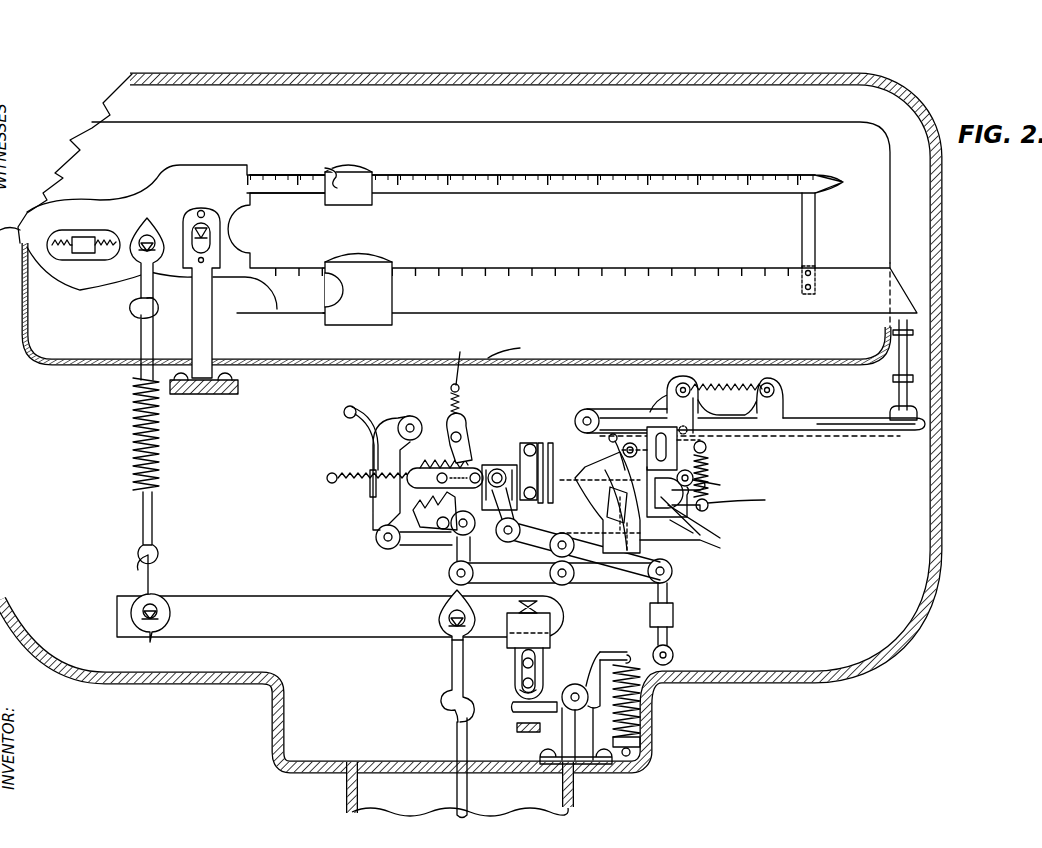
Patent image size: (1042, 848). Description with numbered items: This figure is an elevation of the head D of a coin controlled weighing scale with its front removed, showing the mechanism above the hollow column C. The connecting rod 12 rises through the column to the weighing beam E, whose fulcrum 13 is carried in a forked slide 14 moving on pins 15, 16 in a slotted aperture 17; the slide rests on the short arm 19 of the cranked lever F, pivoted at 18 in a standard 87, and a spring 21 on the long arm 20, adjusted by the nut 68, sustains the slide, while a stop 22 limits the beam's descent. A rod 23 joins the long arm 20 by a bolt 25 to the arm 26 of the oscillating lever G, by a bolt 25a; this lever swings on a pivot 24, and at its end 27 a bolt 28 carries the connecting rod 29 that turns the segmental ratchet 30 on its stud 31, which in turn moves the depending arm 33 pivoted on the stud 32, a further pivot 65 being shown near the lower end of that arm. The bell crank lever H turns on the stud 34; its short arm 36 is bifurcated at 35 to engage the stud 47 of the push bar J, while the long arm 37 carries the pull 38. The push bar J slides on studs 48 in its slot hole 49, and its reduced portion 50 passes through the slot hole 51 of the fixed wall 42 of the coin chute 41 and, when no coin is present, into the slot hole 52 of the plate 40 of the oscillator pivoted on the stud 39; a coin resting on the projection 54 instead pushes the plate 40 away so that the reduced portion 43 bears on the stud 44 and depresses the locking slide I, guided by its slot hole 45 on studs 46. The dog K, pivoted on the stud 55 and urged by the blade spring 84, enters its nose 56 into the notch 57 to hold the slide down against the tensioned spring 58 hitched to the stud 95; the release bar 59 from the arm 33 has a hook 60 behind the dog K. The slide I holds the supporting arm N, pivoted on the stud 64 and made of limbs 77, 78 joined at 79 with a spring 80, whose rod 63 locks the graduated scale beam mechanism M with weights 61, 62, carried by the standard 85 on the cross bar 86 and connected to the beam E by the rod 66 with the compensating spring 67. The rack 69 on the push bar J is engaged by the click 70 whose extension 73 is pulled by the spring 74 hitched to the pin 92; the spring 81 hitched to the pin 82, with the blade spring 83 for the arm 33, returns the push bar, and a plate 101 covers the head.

The connecting rod 12 is at (447, 750).
The fulcrum 13 is at (509, 607).
The forked slide 14 is at (510, 636).
The pin 15 is at (522, 663).
The pin 16 is at (520, 692).
The slotted aperture 17 is at (522, 680).
The pivot 18 is at (576, 678).
The short arm 19 is at (512, 715).
The long arm 20 is at (640, 650).
The spring 21 is at (641, 683).
The stop 22 is at (526, 740).
The rod 23 is at (680, 635).
The pivot 24 is at (572, 578).
The bolt 25 is at (673, 655).
The bolt 25a is at (673, 576).
The arm 26 is at (622, 586).
The end 27 is at (560, 573).
The bolt 28 is at (449, 577).
The connecting rod 29 is at (453, 557).
The segmental ratchet 30 is at (440, 540).
The stud 31 is at (438, 513).
The stud 32 is at (405, 416).
The depending ratchet-engaging arm 33 is at (383, 503).
The stud 34 is at (517, 536).
The bifurcated end 35 is at (498, 468).
The short arm 36 is at (492, 505).
The long arm 37 is at (578, 510).
The pull 38 is at (667, 512).
The stud 39 is at (584, 550).
The plate 40 is at (552, 440).
The coin chute 41 is at (544, 433).
The fixed wall 42 is at (518, 468).
The reduced portion 43 is at (695, 474).
The stud 44 is at (700, 486).
The slot hole 45 is at (708, 505).
The studs 46 is at (748, 499).
The stud 47 is at (485, 462).
The studs 48 is at (432, 468).
The slot hole 49 is at (456, 483).
The reduced portion 50 is at (528, 446).
The slot hole 51 is at (524, 495).
The slot hole 52 is at (540, 448).
The projection 54 is at (605, 505).
The stud 55 is at (630, 442).
The nose 56 is at (684, 520).
The notch 57 is at (705, 525).
The tensioned spring 58 is at (718, 477).
The release bar 59 is at (486, 538).
The hook 60 is at (640, 536).
The weight 61 is at (400, 260).
The weight 62 is at (363, 172).
The rod 63 is at (916, 352).
The stud 64 is at (590, 410).
The pivot 65 is at (375, 522).
The rod 66 is at (166, 515).
The compensating coil spring 67 is at (124, 436).
The adjusting nut 68 is at (640, 752).
The rack 69 is at (448, 418).
The click 70 is at (445, 460).
The extension 73 is at (468, 417).
The tensioned spring 74 is at (447, 393).
The limb 77 is at (627, 421).
The limb 78 is at (762, 425).
The pivot 79 is at (688, 430).
The spring 80 is at (710, 382).
The spring 81 is at (359, 467).
The stud 82 is at (326, 479).
The blade spring 83 is at (368, 425).
The blade spring 84 is at (607, 452).
The standard 85 is at (218, 351).
The cross bar 86 is at (217, 403).
The standard 87 is at (563, 755).
The pin 92 is at (454, 360).
The stud 95 is at (708, 445).
The plate 101 is at (492, 353).
The column C is at (579, 811).
The head D is at (948, 570).
The weighing beam E is at (340, 618).
The cranked lever F is at (618, 643).
The oscillating lever G is at (596, 589).
The bell crank lever H is at (546, 524).
The locking slide I is at (710, 459).
The push bar J is at (492, 467).
The depending dog K is at (674, 402).
The graduated scale beam mechanism M is at (472, 239).
The supporting arm N is at (810, 441).